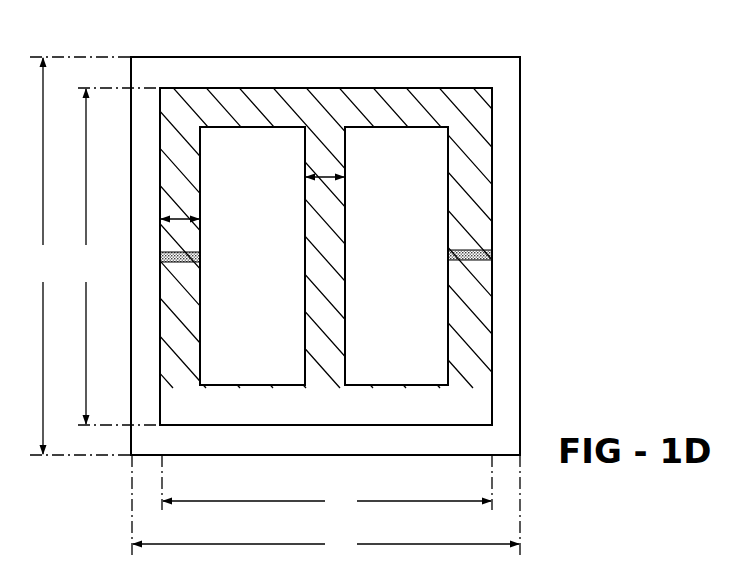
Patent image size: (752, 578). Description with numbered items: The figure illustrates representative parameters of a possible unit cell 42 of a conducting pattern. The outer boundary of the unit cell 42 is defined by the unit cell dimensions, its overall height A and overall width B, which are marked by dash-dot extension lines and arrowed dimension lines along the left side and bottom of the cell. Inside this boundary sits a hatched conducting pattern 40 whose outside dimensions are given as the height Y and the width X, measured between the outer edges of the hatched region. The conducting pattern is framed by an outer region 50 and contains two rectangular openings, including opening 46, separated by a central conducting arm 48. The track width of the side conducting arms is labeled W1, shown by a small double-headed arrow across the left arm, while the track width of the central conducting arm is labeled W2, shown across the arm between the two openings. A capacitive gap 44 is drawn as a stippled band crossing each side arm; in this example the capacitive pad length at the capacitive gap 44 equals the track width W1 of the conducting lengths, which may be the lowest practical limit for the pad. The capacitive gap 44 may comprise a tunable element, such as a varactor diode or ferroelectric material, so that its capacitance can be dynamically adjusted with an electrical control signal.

The semiconductor die / hatched region 40 is at (393, 96).
The unit cell 42 is at (510, 103).
The capacitive gap 44 is at (201, 258).
The conducting length 46 is at (206, 332).
The central web between openings 48 is at (330, 300).
The frame region 50 is at (172, 95).
The track width of side conducting arms W1 is at (178, 217).
The track width of central conducting arm W2 is at (325, 180).
The unit cell dimension A is at (80, 256).
The conducting pattern outside dimension Y is at (118, 256).
The conducting pattern outside dimension X is at (327, 483).
The unit cell dimension B is at (326, 506).